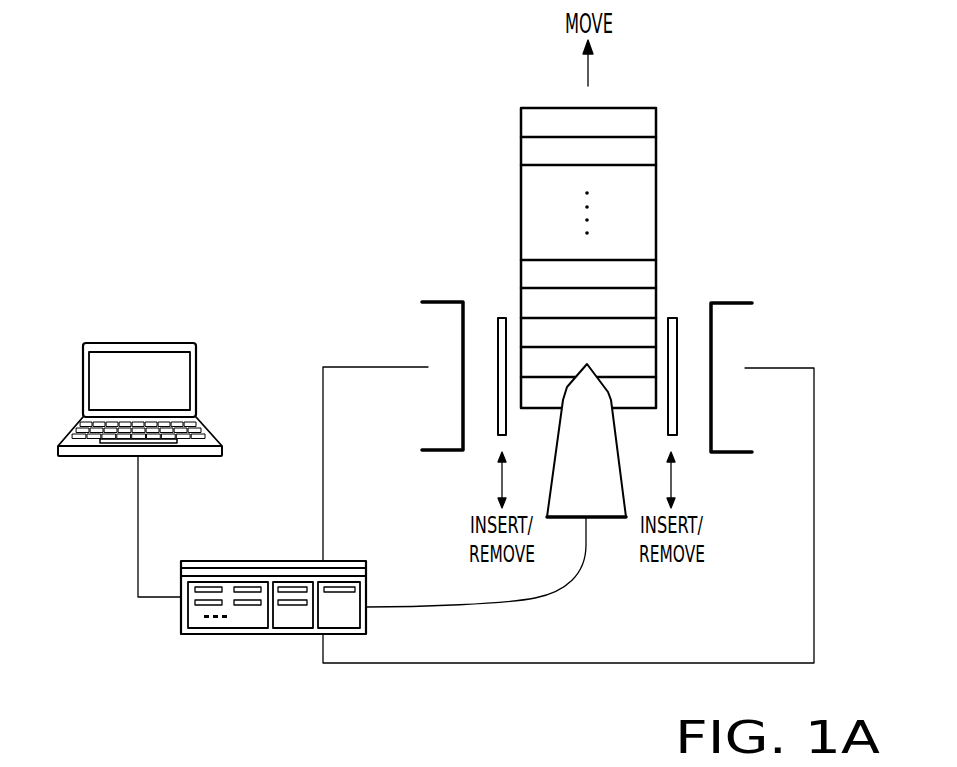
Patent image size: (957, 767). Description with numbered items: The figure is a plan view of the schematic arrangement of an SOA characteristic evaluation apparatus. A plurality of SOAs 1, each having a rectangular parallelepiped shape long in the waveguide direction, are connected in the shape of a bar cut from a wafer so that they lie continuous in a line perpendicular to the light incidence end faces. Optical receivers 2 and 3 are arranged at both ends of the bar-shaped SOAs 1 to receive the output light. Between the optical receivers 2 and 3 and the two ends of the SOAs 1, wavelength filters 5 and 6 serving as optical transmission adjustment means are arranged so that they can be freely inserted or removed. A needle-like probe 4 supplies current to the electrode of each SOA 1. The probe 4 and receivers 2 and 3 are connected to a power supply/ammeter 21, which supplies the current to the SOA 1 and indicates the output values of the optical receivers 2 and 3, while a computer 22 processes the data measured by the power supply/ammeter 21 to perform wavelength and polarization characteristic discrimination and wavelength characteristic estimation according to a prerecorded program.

The SOA 1 is at (656, 124).
The optical receiver 2 is at (433, 302).
The optical receiver 3 is at (740, 303).
The needle-like probe 4 is at (611, 520).
The wavelength filter 5 is at (503, 318).
The wavelength filter 6 is at (672, 318).
The power supply/ammeter 21 is at (240, 561).
The computer 22 is at (196, 384).